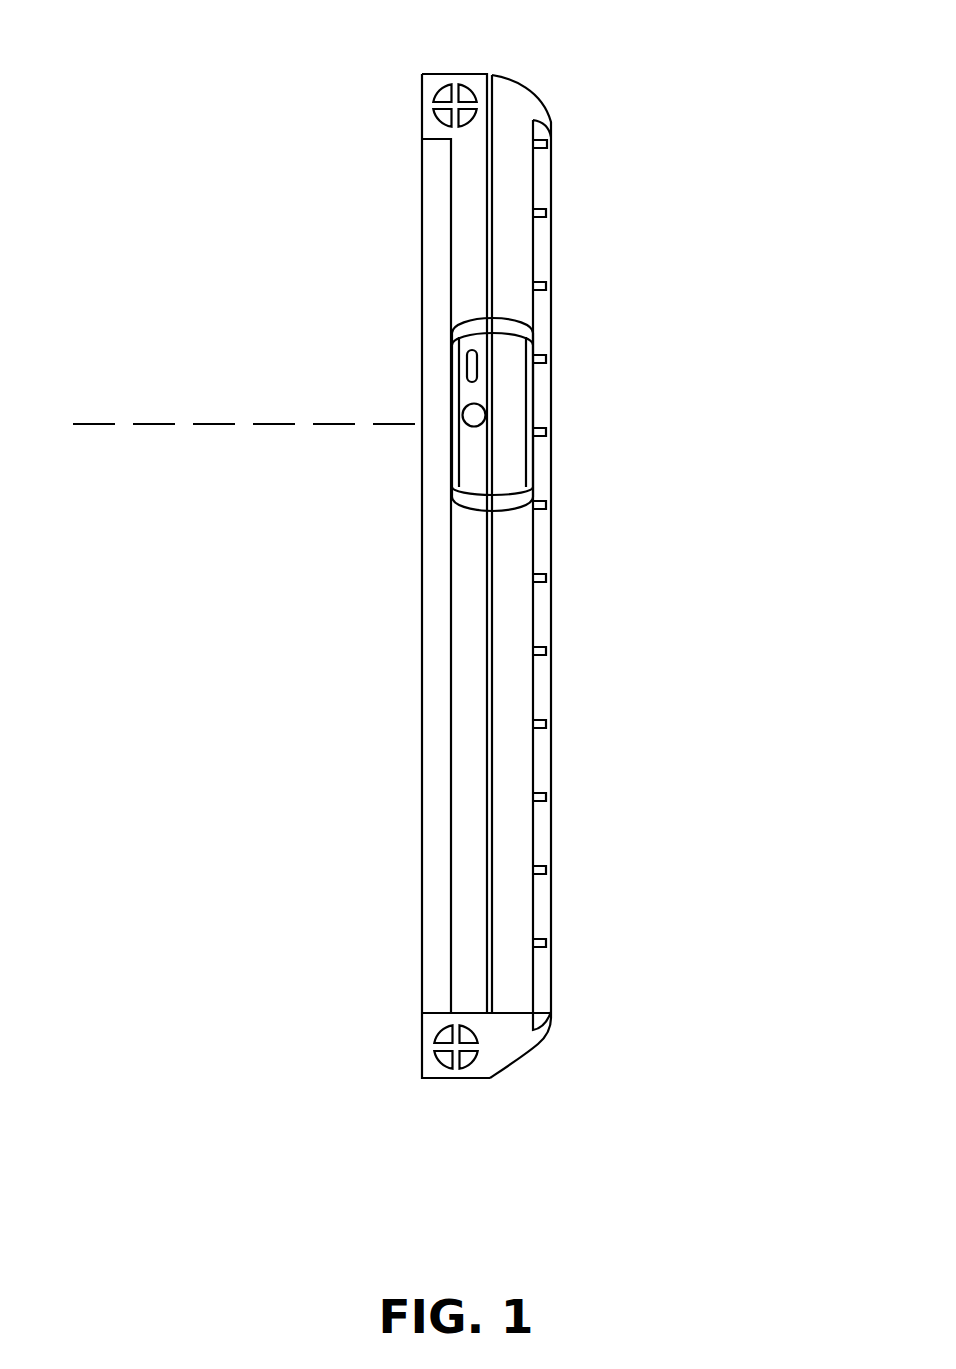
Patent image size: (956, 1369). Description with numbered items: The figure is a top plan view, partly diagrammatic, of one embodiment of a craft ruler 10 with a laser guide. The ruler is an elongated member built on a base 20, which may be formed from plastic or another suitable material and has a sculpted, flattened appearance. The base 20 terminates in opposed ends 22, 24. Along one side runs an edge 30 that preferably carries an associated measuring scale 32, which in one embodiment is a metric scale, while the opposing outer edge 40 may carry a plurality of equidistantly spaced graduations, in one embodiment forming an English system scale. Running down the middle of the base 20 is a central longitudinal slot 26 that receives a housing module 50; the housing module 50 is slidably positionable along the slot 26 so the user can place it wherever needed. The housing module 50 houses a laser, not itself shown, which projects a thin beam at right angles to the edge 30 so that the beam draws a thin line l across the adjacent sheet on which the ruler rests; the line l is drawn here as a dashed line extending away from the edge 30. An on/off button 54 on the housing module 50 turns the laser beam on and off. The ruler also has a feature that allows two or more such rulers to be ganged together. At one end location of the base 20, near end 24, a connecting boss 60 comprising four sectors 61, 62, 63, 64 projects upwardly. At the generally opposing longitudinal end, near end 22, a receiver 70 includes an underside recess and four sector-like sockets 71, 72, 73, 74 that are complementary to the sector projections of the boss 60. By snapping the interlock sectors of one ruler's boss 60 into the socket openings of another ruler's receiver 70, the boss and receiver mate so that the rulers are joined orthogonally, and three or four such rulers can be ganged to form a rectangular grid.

The craft ruler 10 is at (298, 168).
The base 20 is at (423, 940).
The end 22 is at (475, 80).
The end 24 is at (435, 1080).
The central longitudinal slot 26 is at (490, 208).
The edge 30 is at (425, 347).
The measuring scale 32 is at (440, 731).
The outer edge 40 is at (551, 305).
The housing module 50 is at (510, 462).
The on/off button 54 is at (455, 385).
The connecting boss 60 is at (498, 1075).
The sector 61 is at (462, 1063).
The sector 62 is at (475, 1037).
The sector 63 is at (445, 1035).
The sector 64 is at (445, 1050).
The receiver 70 is at (430, 82).
The sector-like socket 71 is at (462, 90).
The sector-like socket 72 is at (435, 97).
The sector-like socket 73 is at (440, 118).
The sector-like socket 74 is at (472, 118).
The line l is at (223, 425).